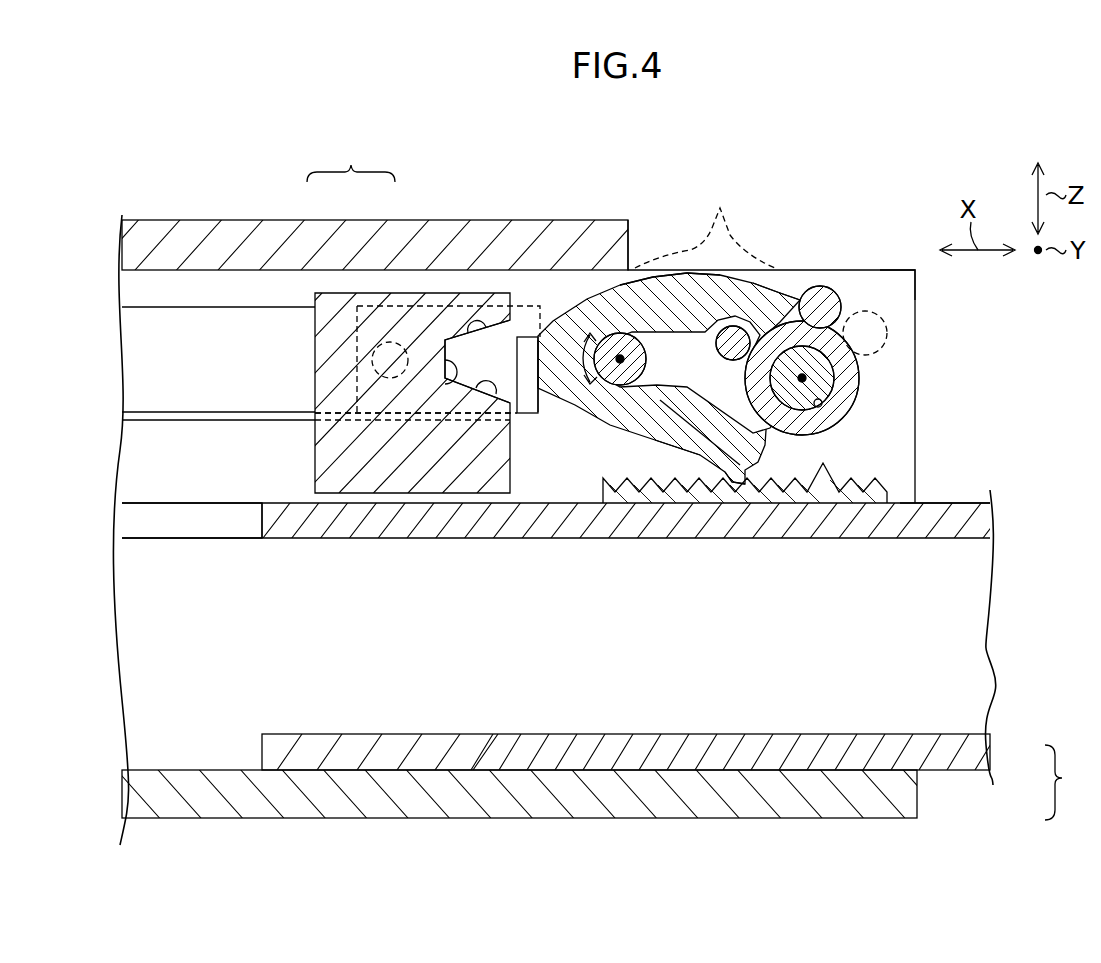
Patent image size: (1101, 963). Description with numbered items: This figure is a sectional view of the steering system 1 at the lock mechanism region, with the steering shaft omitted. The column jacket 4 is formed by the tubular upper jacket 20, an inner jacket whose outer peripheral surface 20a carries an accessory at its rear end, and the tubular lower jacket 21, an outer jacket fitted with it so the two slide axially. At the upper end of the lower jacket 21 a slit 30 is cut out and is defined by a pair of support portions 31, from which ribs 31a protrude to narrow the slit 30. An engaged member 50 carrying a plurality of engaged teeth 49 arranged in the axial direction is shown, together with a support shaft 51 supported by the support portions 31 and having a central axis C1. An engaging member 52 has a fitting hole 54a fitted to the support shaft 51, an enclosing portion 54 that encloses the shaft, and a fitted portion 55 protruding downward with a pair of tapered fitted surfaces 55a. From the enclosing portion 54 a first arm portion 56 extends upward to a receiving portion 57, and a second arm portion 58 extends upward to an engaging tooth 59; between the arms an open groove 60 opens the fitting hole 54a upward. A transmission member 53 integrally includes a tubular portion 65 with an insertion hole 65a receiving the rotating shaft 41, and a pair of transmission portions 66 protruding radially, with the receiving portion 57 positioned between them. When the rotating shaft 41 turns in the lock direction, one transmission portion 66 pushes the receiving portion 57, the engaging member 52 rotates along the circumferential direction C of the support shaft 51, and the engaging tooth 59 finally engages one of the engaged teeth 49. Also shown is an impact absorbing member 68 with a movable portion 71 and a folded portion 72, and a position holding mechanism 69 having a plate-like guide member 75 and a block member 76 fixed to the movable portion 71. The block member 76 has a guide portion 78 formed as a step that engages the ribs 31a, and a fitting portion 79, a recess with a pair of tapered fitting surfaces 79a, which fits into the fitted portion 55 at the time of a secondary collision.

The steering system 1 is at (520, 869).
The column jacket 4 is at (1062, 782).
The upper jacket 20 is at (991, 764).
The outer peripheral surface 20a is at (966, 500).
The lower jacket 21 is at (918, 805).
The slit 30 is at (906, 290).
The support portion 31 is at (885, 282).
The rib 31a is at (210, 462).
The rotating shaft 41 is at (832, 382).
The engaged teeth 49 is at (823, 470).
The engaged member 50 is at (893, 493).
The support shaft 51 is at (640, 285).
The engaging member 52 is at (720, 208).
The transmission member 53 is at (888, 325).
The enclosing portion 54 is at (582, 398).
The fitting hole 54a is at (598, 410).
The fitted portion 55 is at (556, 336).
The fitted surfaces 55a is at (568, 330).
The first arm portion 56 is at (672, 277).
The receiving portion 57 is at (782, 290).
The second arm portion 58 is at (678, 430).
The engaging tooth 59 is at (731, 482).
The open groove 60 is at (678, 410).
The tubular portion 65 is at (846, 360).
The insertion hole 65a is at (843, 406).
The transmission portion 66 is at (716, 344).
The impact absorbing member 68 is at (207, 322).
The position holding mechanism 69 is at (351, 160).
The movable portion 71 is at (437, 304).
The folded portion 72 is at (520, 320).
The guide member 75 is at (318, 236).
The block member 76 is at (392, 315).
The guide portion 78 is at (352, 418).
The fitting portion 79 is at (462, 388).
The fitting surfaces 79a is at (478, 330).
The circumferential direction C is at (512, 355).
The central axis C1 is at (620, 338).